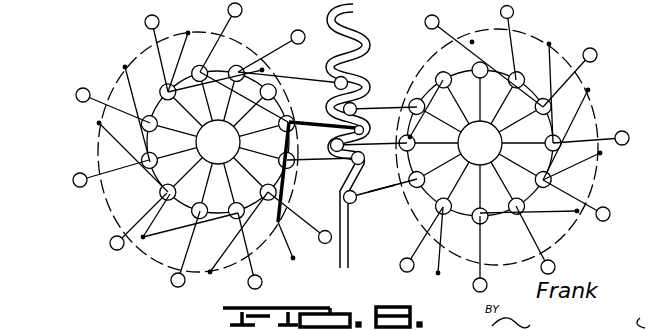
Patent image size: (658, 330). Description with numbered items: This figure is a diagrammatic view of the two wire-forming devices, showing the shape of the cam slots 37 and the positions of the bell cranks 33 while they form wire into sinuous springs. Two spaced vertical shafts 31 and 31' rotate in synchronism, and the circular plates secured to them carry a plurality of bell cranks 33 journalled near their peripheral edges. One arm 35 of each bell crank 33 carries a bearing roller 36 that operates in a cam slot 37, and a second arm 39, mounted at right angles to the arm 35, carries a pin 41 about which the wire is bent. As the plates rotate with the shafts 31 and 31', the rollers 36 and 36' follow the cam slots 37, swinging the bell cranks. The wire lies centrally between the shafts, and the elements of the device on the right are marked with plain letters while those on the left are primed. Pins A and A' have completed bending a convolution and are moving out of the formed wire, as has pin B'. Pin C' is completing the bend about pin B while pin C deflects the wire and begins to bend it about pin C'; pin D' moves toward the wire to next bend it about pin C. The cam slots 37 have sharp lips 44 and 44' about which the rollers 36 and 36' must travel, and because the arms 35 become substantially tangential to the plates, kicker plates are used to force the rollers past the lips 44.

The vertical shaft 31 is at (480, 143).
The vertical shaft 31' is at (218, 142).
The bell crank 33 is at (130, 198).
The arm 35 is at (441, 228).
The bearing roller 36 is at (505, 168).
The bearing roller 36' is at (192, 170).
The cam slot 37 is at (585, 79).
The arm 39 is at (368, 192).
The pin 41 is at (114, 250).
The lip 44 is at (404, 239).
The lip 44' is at (305, 253).
The pin A is at (381, 100).
The pin A' is at (293, 76).
The pin B is at (355, 147).
The pin B' is at (321, 158).
The pin C is at (381, 185).
The pin C' is at (326, 170).
The pin D' is at (300, 229).